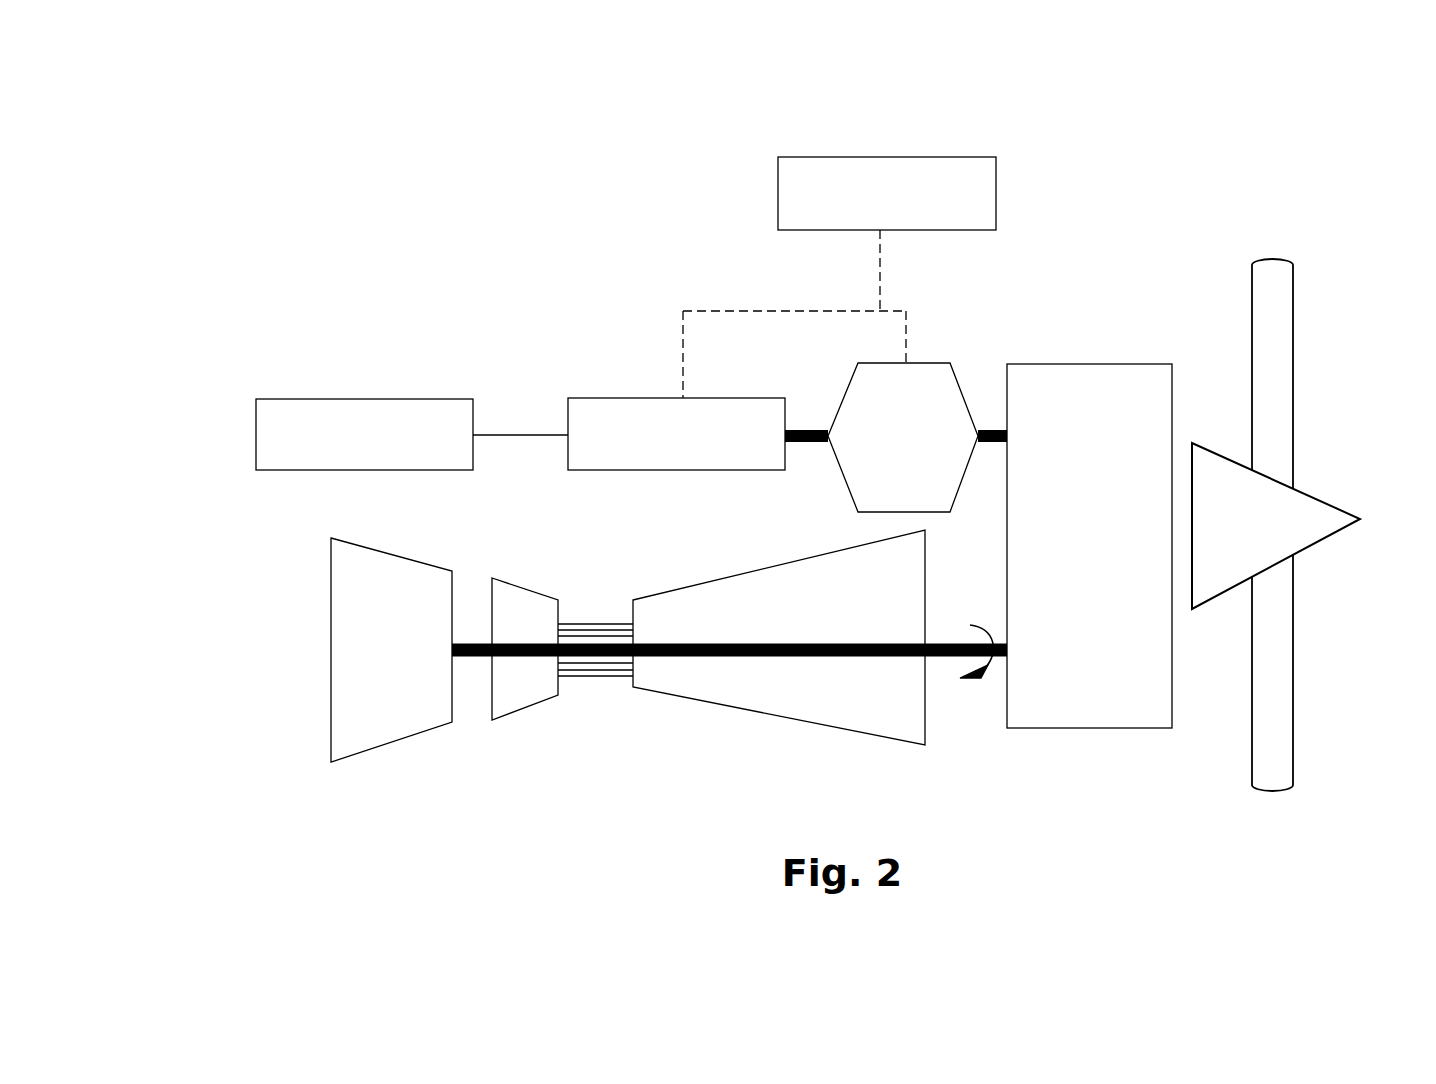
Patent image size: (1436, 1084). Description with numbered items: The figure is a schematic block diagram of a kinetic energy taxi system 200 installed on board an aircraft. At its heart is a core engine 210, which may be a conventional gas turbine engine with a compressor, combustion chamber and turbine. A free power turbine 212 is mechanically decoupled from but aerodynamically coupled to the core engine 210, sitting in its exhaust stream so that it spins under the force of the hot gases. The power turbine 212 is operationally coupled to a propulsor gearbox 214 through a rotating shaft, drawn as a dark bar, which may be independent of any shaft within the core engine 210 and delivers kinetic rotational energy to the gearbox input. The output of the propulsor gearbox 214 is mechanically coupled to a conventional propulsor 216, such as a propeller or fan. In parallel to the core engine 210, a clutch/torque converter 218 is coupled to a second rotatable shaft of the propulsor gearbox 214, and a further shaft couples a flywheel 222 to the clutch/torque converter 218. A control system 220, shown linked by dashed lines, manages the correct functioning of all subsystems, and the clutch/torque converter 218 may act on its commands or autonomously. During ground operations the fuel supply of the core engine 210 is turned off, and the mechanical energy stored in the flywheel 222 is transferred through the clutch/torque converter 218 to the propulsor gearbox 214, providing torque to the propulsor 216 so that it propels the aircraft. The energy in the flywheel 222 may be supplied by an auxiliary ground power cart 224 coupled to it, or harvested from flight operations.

The kinetic energy taxi system 200 is at (330, 165).
The core engine 210 is at (735, 708).
The power turbine 212 is at (331, 720).
The propulsor gearbox 214 is at (1123, 363).
The propulsor 216 is at (1345, 498).
The clutch/torque converter 218 is at (932, 362).
The control system 220 is at (960, 157).
The flywheel 222 is at (632, 398).
The auxiliary ground power cart 224 is at (280, 470).